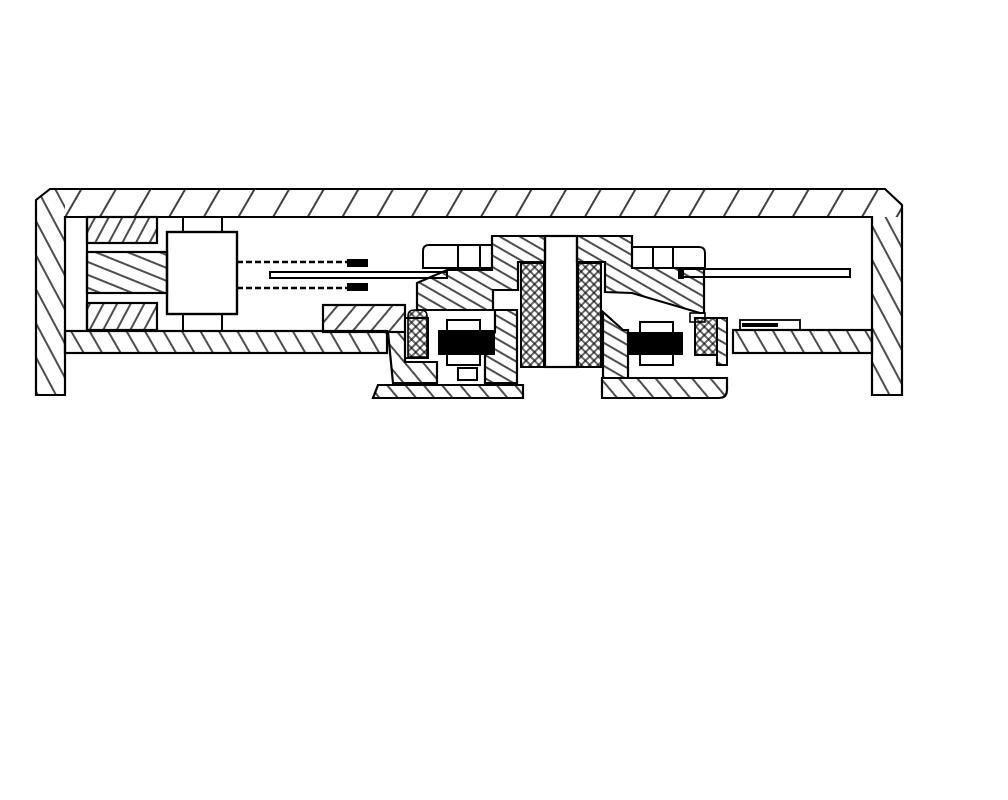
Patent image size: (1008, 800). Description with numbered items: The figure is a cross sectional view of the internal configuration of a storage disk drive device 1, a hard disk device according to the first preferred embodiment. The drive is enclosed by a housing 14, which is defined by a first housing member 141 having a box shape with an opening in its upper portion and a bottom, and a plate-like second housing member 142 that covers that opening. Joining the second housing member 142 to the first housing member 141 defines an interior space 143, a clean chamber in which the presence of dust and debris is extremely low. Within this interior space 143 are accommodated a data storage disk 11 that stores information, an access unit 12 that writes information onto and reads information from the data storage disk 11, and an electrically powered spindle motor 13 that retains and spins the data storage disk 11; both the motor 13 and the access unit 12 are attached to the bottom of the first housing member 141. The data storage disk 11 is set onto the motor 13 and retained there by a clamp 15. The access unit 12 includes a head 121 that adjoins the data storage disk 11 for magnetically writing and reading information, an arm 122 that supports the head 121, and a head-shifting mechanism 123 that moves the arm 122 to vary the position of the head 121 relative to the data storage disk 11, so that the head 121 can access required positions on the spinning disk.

The storage disk drive device 1 is at (203, 157).
The data storage disk 11 is at (788, 273).
The access unit 12 is at (248, 432).
The head 121 is at (357, 292).
The arm 122 is at (270, 290).
The head-shifting mechanism 123 is at (213, 300).
The motor 13 is at (528, 236).
The housing 14 is at (765, 97).
The first housing member 141 is at (890, 268).
The second housing member 142 is at (783, 212).
The interior space 143 is at (727, 243).
The clamp 15 is at (680, 262).